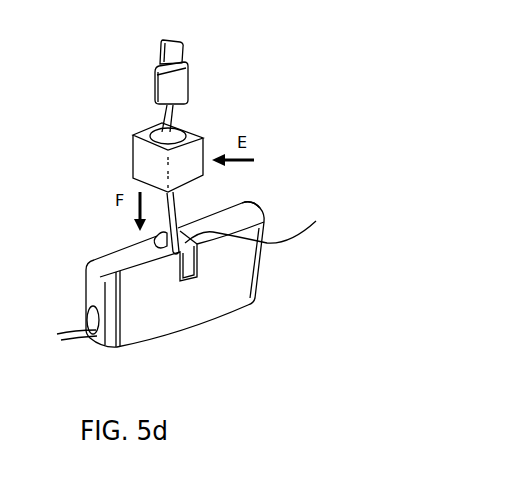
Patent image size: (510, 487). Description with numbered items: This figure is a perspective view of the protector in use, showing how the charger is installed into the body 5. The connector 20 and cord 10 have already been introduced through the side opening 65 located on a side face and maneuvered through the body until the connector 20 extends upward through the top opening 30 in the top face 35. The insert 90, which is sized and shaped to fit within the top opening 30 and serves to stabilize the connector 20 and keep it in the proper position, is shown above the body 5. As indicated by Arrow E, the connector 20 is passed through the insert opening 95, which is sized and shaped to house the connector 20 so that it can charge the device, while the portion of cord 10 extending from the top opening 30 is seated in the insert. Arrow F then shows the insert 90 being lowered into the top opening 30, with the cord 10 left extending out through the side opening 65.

The body 5 is at (230, 284).
The cord 10 is at (77, 337).
The connector 20 is at (186, 66).
The top opening 30 is at (256, 226).
The top face 35 is at (245, 222).
The side opening 65 is at (88, 309).
The insert 90 is at (150, 173).
The insert opening 95 is at (154, 129).